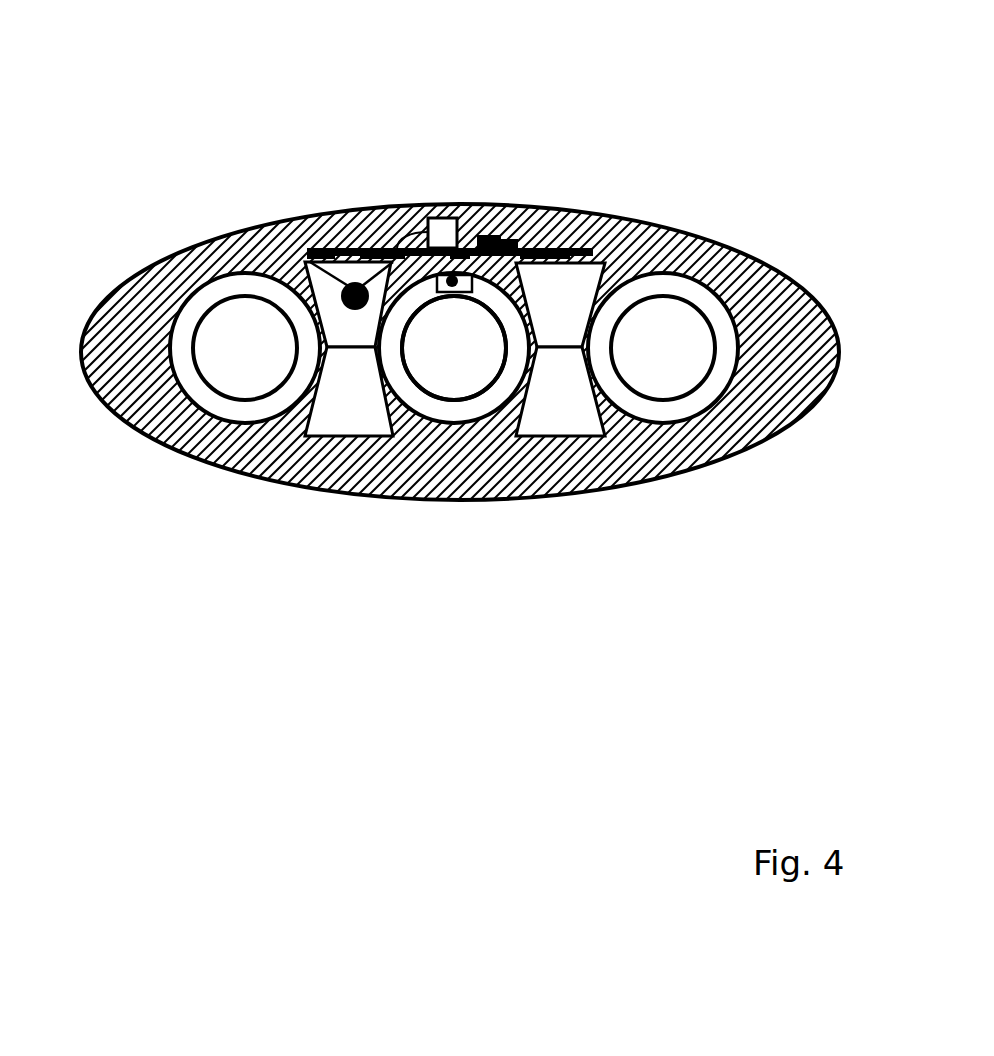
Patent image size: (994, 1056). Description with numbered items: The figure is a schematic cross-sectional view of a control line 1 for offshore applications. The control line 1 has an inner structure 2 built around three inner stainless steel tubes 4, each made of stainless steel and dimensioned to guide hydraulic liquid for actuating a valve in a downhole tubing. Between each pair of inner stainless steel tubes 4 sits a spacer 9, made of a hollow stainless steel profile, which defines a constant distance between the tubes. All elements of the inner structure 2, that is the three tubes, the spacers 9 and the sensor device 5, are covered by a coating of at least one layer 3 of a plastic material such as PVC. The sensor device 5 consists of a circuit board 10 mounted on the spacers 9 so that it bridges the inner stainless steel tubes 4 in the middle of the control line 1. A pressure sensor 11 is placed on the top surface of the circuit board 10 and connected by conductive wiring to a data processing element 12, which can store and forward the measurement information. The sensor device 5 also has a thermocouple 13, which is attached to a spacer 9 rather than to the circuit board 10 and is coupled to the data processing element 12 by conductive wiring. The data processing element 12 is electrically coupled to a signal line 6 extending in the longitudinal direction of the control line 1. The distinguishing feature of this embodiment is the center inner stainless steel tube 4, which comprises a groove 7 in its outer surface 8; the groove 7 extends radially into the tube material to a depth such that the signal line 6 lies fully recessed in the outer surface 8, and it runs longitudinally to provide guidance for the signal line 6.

The control line 1 is at (190, 202).
The inner structure 2 is at (505, 448).
The layer 3 is at (785, 390).
The inner stainless steel tube 4 is at (230, 410).
The sensor device 5 is at (430, 215).
The signal line 6 is at (480, 238).
The groove 7 is at (457, 273).
The outer surface 8 is at (422, 405).
The spacer 9 is at (345, 413).
The circuit board 10 is at (573, 250).
The pressure sensor 11 is at (518, 240).
The data processing element 12 is at (447, 237).
The thermocouple 13 is at (312, 262).